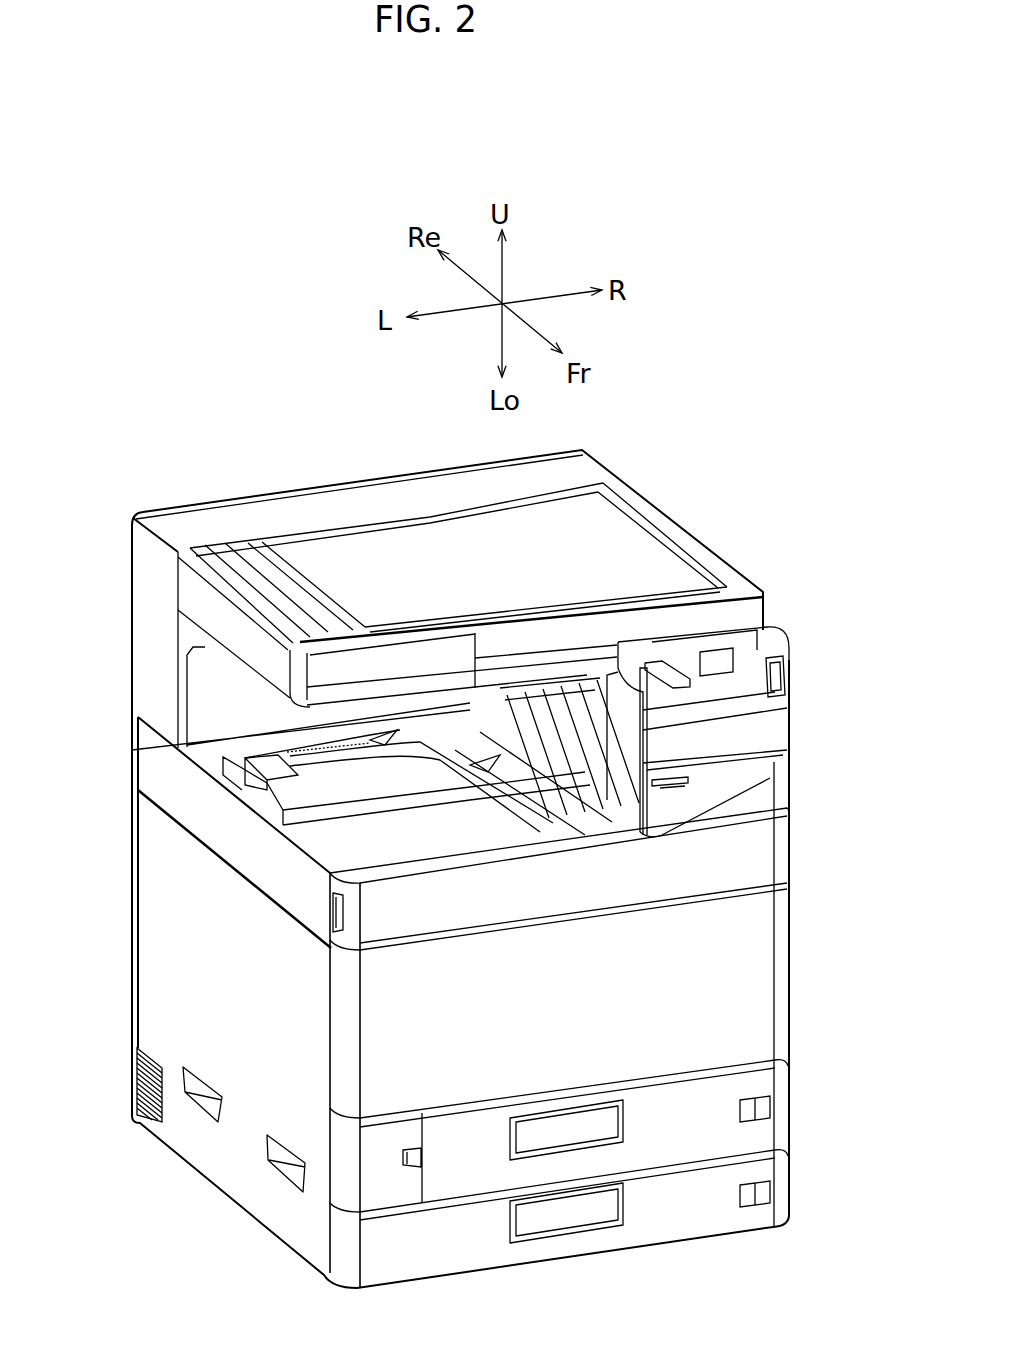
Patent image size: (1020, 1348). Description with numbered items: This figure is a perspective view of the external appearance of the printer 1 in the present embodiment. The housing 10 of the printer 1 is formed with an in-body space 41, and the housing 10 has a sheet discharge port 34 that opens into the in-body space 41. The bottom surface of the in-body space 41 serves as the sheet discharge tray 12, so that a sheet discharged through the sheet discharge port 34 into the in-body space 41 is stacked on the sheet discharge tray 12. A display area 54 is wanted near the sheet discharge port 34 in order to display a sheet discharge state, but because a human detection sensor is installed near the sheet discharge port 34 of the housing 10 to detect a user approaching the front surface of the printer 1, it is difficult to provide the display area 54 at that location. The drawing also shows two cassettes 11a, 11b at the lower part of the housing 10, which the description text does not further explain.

The printer 1 is at (154, 476).
The housing 10 is at (232, 910).
The sheet feed cassette 11a is at (718, 1217).
The sheet feed cassette 11b is at (723, 1141).
The sheet discharge tray 12 is at (522, 829).
The sheet discharge port 34 is at (570, 704).
The in-body space 41 is at (228, 713).
The display area 54 is at (673, 790).